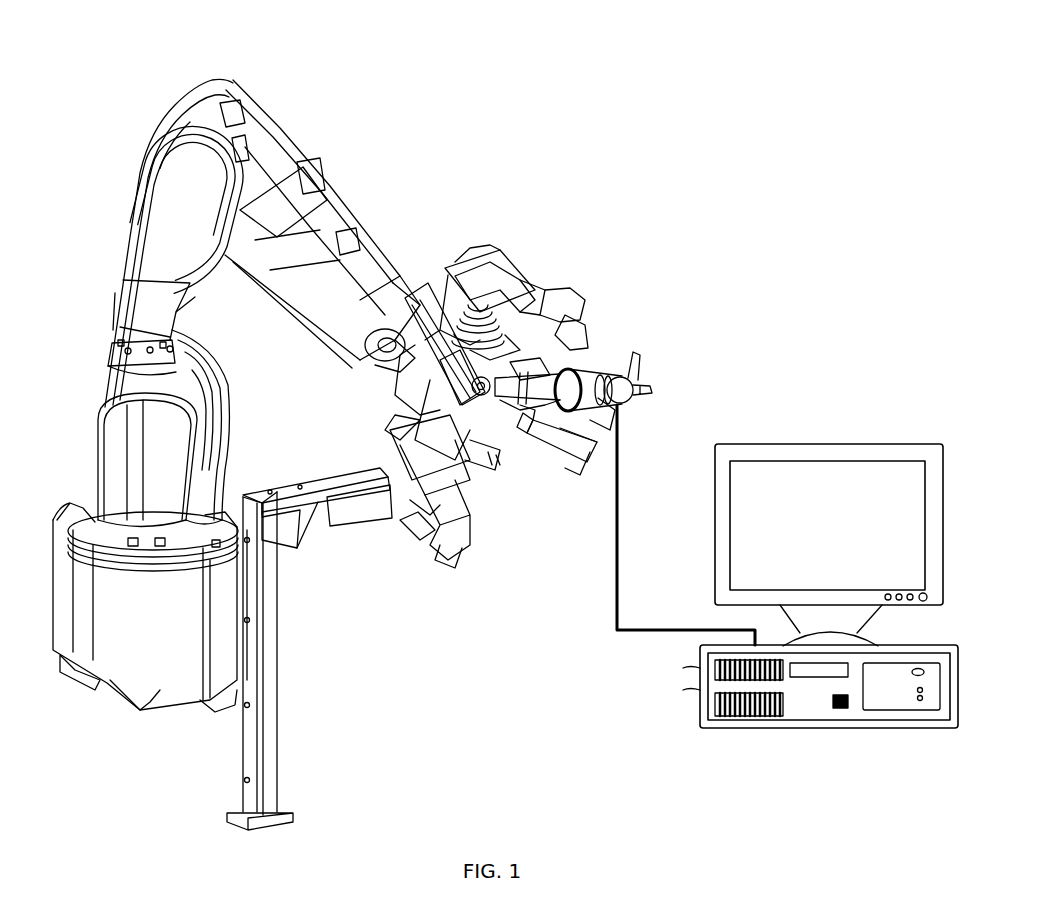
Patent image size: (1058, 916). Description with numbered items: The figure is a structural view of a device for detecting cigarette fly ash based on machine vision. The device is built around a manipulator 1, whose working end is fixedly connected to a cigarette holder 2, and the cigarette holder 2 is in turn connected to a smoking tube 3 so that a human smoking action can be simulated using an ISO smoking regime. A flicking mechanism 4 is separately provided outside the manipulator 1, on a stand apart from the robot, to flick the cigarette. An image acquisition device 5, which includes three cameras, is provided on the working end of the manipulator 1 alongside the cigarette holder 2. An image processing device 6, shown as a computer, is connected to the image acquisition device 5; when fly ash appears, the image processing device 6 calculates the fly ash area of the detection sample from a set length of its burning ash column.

The manipulator 1 is at (255, 237).
The cigarette holder 2 is at (470, 385).
The smoking tube 3 is at (425, 352).
The flicking mechanism 4 is at (348, 512).
The image acquisition device 5 is at (607, 370).
The image processing device 6 is at (742, 708).